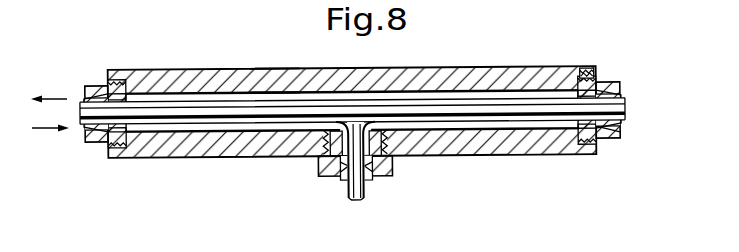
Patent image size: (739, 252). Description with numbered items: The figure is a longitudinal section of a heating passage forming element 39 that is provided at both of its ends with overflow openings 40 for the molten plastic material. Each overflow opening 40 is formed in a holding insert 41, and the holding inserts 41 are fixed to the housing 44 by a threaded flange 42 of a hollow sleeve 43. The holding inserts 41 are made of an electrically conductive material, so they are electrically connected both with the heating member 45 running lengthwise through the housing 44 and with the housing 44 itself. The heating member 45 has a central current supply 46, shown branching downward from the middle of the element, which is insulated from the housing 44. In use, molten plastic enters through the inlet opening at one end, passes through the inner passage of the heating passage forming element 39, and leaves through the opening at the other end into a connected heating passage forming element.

The heating passage forming element 39 is at (529, 62).
The overflow opening 40 is at (97, 146).
The holding insert 41 is at (108, 87).
The threaded flange 42 is at (592, 69).
The hollow sleeve 43 is at (604, 82).
The housing 44 is at (272, 82).
The heating member 45 is at (191, 118).
The central current supply 46 is at (360, 185).